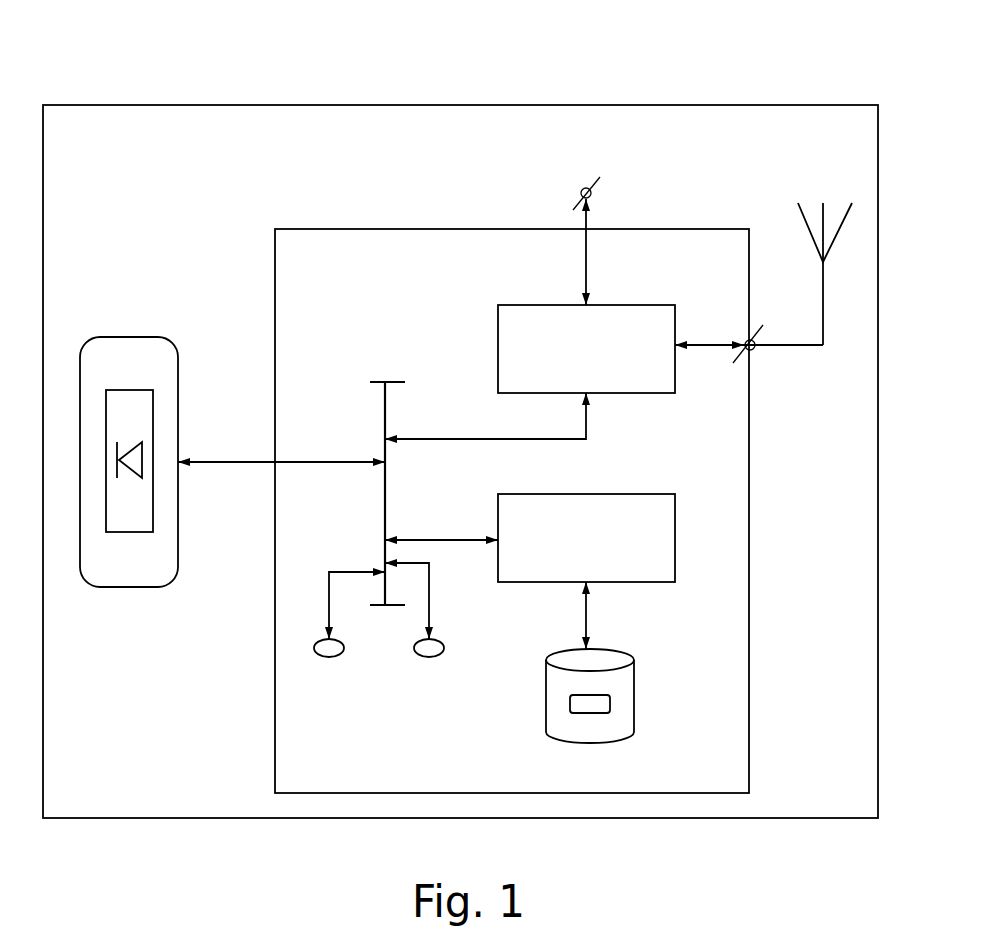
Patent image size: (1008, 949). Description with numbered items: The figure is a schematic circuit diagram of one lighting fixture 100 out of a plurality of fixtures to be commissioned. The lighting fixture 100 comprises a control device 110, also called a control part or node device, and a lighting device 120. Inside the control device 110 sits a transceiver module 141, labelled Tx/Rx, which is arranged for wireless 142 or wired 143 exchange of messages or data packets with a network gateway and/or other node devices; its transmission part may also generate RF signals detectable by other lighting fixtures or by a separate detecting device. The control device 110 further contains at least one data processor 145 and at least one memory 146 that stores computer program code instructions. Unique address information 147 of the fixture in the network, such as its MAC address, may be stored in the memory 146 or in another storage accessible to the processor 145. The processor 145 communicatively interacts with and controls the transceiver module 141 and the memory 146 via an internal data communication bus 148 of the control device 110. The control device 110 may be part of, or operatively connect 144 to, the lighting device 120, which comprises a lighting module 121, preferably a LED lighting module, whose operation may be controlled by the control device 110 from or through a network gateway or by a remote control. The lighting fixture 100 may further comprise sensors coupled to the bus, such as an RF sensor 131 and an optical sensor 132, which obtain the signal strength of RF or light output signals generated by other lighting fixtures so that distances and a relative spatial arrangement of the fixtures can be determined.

The lighting fixture 100 is at (533, 130).
The control device 110 is at (308, 250).
The lighting device 120 is at (137, 337).
The lighting module 121 is at (153, 405).
The RF sensor 131 is at (329, 657).
The optical sensor 132 is at (429, 657).
The transceiver module 141 is at (518, 313).
The wireless exchange 142 is at (844, 220).
The wired exchange 143 is at (592, 191).
The operative connection 144 is at (217, 465).
The data processor 145 is at (648, 547).
The memory 146 is at (550, 686).
The unique address information 147 is at (610, 703).
The internal data communication bus 148 is at (382, 487).